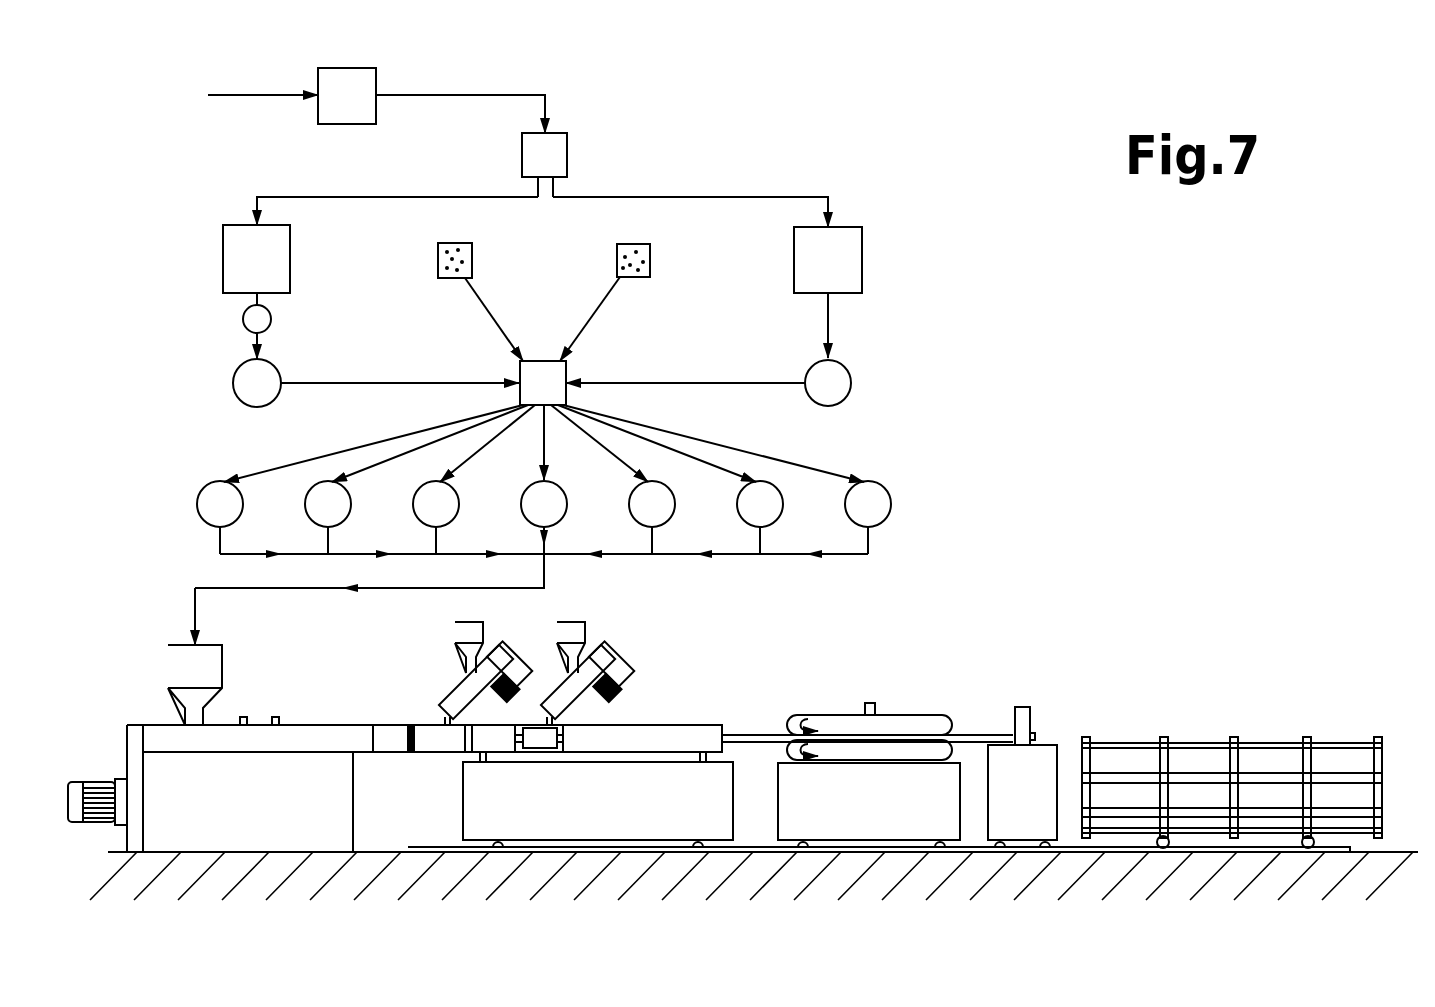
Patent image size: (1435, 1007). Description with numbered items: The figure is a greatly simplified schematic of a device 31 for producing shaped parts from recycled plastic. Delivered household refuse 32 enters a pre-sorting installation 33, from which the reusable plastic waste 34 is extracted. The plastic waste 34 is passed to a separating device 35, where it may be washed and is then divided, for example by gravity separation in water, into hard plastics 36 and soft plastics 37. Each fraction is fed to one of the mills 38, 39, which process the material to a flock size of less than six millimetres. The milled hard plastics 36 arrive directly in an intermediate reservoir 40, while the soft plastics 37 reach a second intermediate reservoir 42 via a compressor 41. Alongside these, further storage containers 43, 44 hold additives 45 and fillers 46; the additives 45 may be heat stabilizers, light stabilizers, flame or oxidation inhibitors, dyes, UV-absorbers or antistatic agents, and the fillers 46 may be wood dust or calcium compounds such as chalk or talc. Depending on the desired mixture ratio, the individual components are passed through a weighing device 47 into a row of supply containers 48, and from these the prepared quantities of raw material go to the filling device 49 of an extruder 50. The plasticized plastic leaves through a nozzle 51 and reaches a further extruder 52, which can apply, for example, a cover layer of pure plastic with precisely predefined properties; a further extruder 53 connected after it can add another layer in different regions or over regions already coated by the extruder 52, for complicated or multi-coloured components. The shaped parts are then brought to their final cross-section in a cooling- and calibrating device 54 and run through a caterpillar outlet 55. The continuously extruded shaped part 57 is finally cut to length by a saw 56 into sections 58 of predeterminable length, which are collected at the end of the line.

The device 31 is at (1003, 361).
The household refuse 32 is at (252, 93).
The pre-sorting installation 33 is at (363, 90).
The plastic waste 34 is at (467, 93).
The separating device 35 is at (555, 158).
The hard plastics 36 is at (647, 194).
The soft plastics 37 is at (443, 195).
The mill 38 is at (237, 252).
The mill 39 is at (847, 260).
The intermediate reservoir 40 is at (835, 387).
The compressor 41 is at (247, 319).
The intermediate reservoir 42 is at (252, 385).
The storage container 43 is at (436, 255).
The storage container 44 is at (653, 256).
The additives 45 is at (440, 265).
The fillers 46 is at (640, 268).
The weighing device 47 is at (550, 380).
The supply containers 48 is at (213, 497).
The filling device 49 is at (190, 663).
The extruder 50 is at (255, 698).
The nozzle 51 is at (395, 733).
The further extruder 52 is at (440, 713).
The further extruder 53 is at (608, 653).
The cooling- and calibrating device 54 is at (653, 723).
The caterpillar outlet 55 is at (838, 727).
The saw 56 is at (1022, 707).
The shaped part 57 is at (982, 738).
The sections 58 is at (1120, 813).